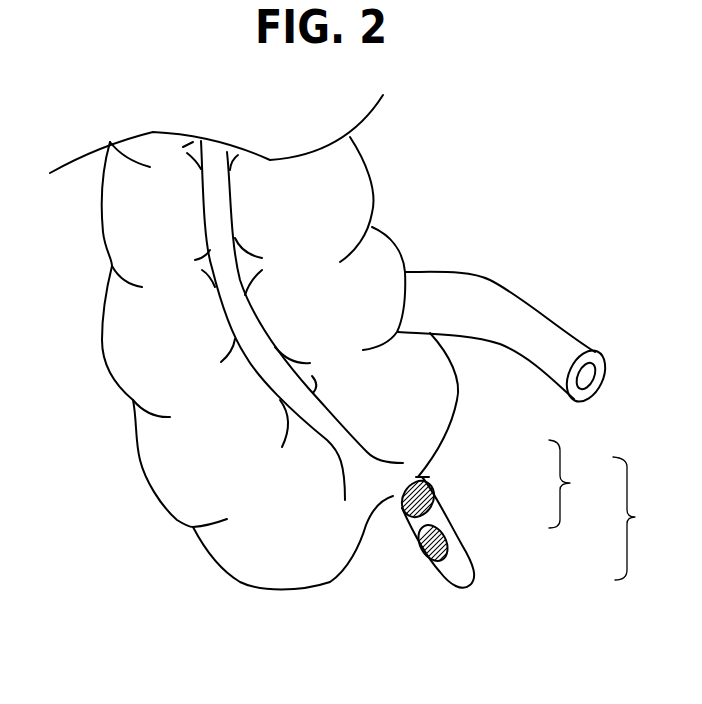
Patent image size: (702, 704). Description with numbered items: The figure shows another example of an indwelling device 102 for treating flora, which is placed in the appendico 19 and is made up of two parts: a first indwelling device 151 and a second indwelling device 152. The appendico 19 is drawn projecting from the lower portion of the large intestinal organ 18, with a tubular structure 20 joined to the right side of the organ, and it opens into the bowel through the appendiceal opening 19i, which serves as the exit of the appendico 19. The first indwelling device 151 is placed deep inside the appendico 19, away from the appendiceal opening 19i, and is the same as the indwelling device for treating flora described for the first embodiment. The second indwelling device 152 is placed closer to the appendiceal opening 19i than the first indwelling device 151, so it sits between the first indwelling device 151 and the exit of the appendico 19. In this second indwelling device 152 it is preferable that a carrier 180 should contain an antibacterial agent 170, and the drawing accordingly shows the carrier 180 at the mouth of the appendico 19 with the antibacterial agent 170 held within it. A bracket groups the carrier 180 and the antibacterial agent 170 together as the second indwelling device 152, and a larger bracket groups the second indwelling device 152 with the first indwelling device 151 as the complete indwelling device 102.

The large intestine 18 is at (273, 560).
The appendico 19 is at (465, 573).
The appendiceal opening 19i is at (393, 498).
The small intestine 20 is at (517, 320).
The indwelling device for treating flora 102 is at (649, 518).
The first indwelling device 151 is at (447, 540).
The second indwelling device 152 is at (584, 484).
The antibacterial agent 170 is at (433, 501).
The carrier 180 is at (428, 476).